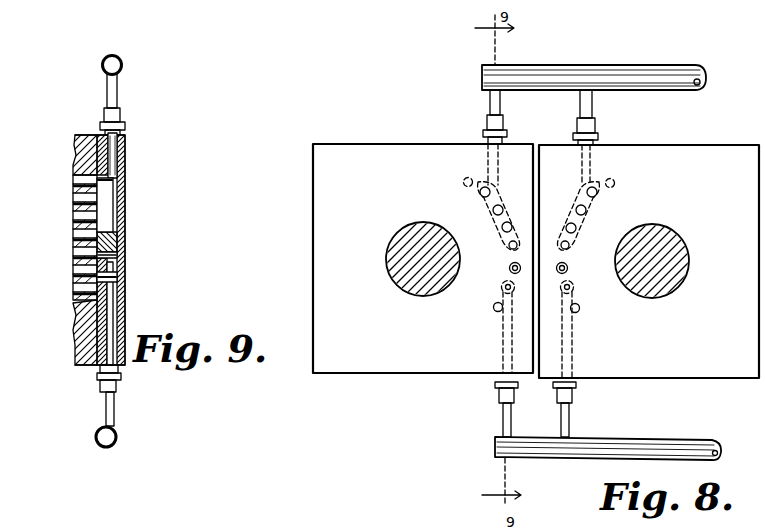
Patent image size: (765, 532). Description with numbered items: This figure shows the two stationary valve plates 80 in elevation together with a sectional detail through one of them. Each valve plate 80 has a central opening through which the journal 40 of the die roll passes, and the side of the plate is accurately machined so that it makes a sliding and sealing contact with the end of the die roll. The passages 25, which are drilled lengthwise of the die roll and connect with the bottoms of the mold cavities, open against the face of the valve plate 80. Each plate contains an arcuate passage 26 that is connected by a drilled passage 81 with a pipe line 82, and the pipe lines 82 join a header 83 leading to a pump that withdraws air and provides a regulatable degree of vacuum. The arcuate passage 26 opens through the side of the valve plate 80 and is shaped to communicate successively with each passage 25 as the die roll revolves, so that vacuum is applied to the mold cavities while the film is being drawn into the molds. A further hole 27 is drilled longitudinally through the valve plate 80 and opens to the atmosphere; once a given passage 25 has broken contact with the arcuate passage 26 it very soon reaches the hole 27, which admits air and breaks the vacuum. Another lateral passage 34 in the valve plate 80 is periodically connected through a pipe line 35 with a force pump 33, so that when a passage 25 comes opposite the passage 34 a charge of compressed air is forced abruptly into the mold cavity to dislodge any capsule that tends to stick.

In FIG. 9, the passage 25 is at (75, 200).
In FIG. 8, the passage 25 is at (484, 192).
In FIG. 9, the arcuate passage 26 is at (110, 205).
In FIG. 8, the arcuate passage 26 is at (489, 210).
In FIG. 9, the hole 27 is at (120, 257).
In FIG. 8, the hole 27 is at (512, 262).
In FIG. 9, the force pump 33 is at (114, 407).
In FIG. 9, the lateral passage 34 is at (116, 279).
In FIG. 8, the lateral passage 34 is at (504, 284).
In FIG. 8, the pipe line 35 is at (503, 420).
In FIG. 8, the journal 40 is at (400, 284).
In FIG. 9, the stationary valve plate 80 is at (125, 232).
In FIG. 8, the stationary valve plate 80 is at (381, 148).
In FIG. 9, the drilled passage 81 is at (116, 155).
In FIG. 8, the drilled passage 81 is at (490, 160).
In FIG. 9, the pipe line 82 is at (118, 93).
In FIG. 8, the pipe line 82 is at (500, 110).
In FIG. 9, the header 83 is at (118, 62).
In FIG. 8, the header 83 is at (598, 66).